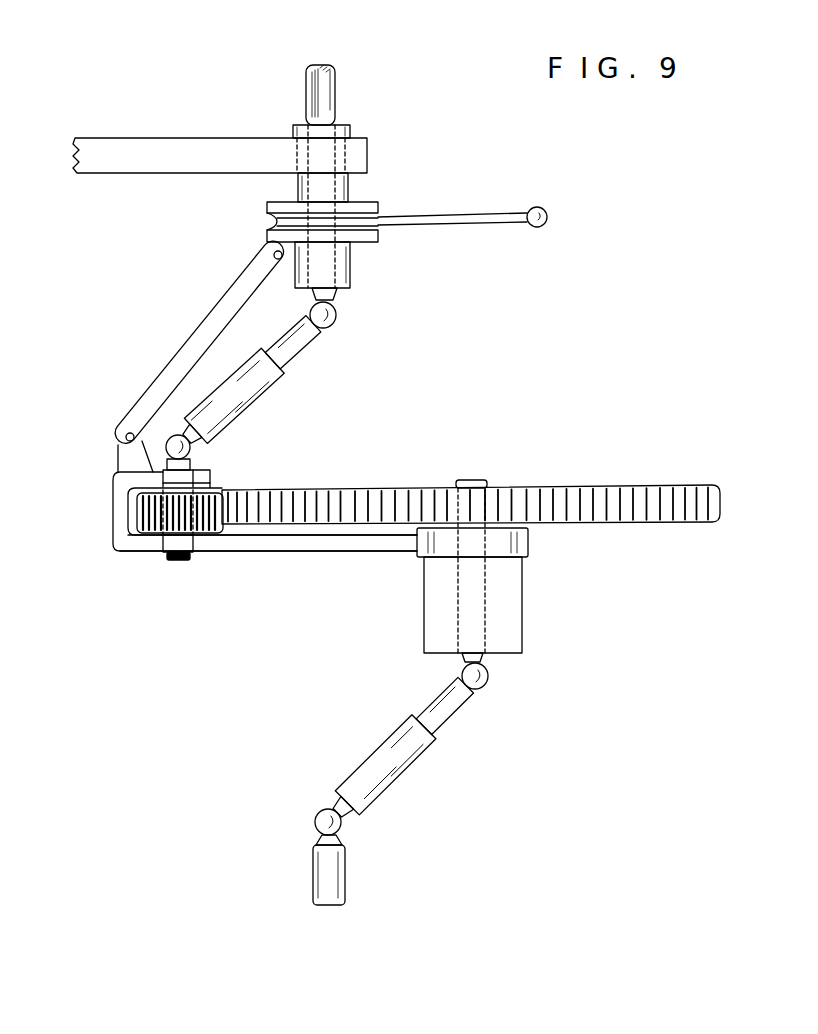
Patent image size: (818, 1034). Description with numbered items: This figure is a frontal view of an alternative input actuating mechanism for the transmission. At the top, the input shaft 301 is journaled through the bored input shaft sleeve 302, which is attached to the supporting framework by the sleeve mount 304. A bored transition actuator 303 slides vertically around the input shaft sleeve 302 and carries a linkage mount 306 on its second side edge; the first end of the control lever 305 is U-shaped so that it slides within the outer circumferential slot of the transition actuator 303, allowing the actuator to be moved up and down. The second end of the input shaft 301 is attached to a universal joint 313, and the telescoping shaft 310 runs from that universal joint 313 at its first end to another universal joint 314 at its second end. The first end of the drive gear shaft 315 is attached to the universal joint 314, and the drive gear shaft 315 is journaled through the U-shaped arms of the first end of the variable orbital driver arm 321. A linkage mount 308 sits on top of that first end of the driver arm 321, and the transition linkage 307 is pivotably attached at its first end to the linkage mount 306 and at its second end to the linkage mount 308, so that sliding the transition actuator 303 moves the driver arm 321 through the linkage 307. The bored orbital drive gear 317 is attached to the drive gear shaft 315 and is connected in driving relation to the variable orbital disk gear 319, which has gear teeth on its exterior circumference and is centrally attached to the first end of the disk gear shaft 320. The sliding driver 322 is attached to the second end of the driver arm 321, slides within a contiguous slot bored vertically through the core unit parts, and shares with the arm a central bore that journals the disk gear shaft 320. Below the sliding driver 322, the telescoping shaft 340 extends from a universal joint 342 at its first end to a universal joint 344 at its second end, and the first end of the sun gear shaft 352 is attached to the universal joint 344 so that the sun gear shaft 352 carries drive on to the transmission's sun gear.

The input shaft 301 is at (322, 62).
The input shaft sleeve 302 is at (350, 125).
The transition actuator 303 is at (378, 200).
The sleeve mount 304 is at (175, 137).
The control lever 305 is at (549, 216).
The linkage mount 306 is at (267, 250).
The transition linkage 307 is at (185, 355).
The linkage mount 308 is at (117, 458).
The telescoping shaft 310 is at (259, 402).
The universal joint 313 is at (336, 320).
The universal joint 314 is at (192, 457).
The drive gear shaft 315 is at (180, 560).
The orbital drive gear 317 is at (137, 513).
The variable orbital disk gear 319 is at (598, 485).
The disk gear shaft 320 is at (475, 480).
The variable orbital driver arm 321 is at (300, 552).
The sliding driver 322 is at (522, 600).
The telescoping shaft 340 is at (375, 747).
The universal joint 342 is at (490, 683).
The universal joint 344 is at (315, 822).
The sun gear shaft 352 is at (345, 872).